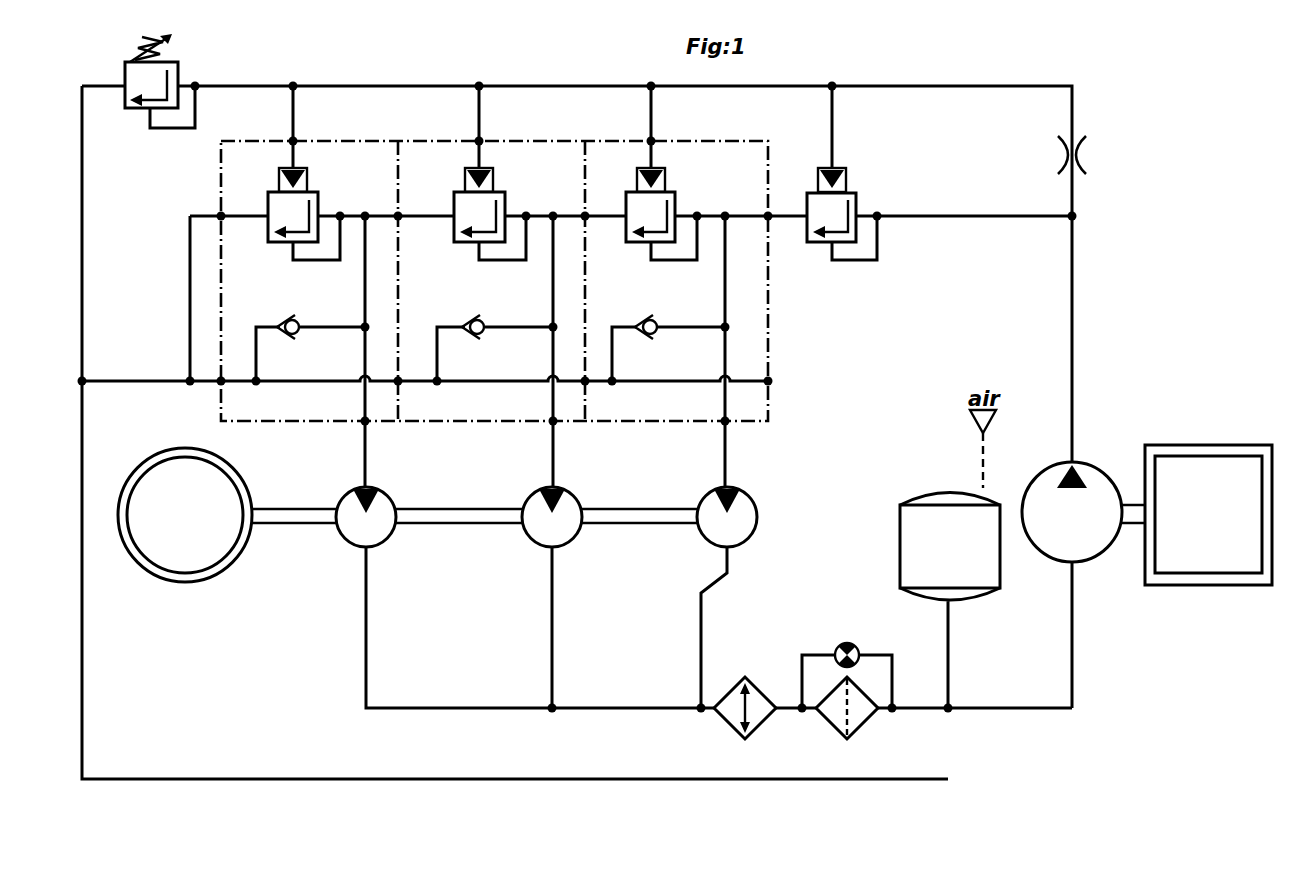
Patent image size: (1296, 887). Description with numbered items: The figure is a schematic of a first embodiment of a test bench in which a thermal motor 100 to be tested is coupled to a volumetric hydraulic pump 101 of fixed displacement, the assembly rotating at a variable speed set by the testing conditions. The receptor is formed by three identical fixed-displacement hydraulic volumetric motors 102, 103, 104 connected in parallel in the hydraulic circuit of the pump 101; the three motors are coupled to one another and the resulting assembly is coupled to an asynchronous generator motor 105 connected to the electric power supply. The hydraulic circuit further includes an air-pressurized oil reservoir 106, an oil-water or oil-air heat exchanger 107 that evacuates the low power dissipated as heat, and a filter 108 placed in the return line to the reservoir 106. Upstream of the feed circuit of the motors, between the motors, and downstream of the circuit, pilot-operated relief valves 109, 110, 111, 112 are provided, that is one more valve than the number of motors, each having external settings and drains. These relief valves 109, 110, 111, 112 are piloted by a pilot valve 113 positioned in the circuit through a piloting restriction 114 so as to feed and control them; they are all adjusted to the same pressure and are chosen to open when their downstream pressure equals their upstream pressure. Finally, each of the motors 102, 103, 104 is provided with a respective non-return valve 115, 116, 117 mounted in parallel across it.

The thermal motor 100 is at (1218, 552).
The volumetric hydraulic pump 101 is at (1088, 473).
The hydraulic volumetric motor 102 is at (746, 500).
The hydraulic volumetric motor 103 is at (570, 497).
The hydraulic volumetric motor 104 is at (385, 498).
The asynchronous generator motor 105 is at (228, 497).
The oil reservoir 106 is at (918, 508).
The heat exchanger 107 is at (753, 680).
The filter 108 is at (826, 715).
The pilot-operated relief valve 109 is at (856, 193).
The pilot-operated relief valve 110 is at (675, 192).
The pilot-operated relief valve 111 is at (505, 192).
The pilot-operated relief valve 112 is at (318, 192).
The pilot valve 113 is at (178, 62).
The piloting restriction 114 is at (1080, 156).
The non-return valve 115 is at (655, 322).
The non-return valve 116 is at (482, 322).
The non-return valve 117 is at (297, 322).